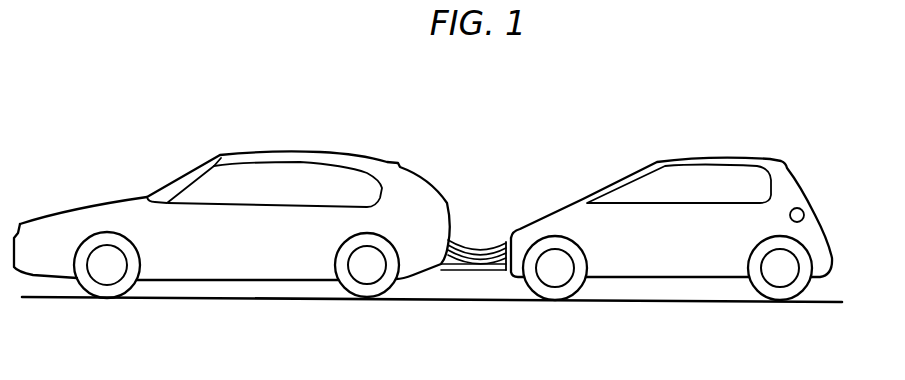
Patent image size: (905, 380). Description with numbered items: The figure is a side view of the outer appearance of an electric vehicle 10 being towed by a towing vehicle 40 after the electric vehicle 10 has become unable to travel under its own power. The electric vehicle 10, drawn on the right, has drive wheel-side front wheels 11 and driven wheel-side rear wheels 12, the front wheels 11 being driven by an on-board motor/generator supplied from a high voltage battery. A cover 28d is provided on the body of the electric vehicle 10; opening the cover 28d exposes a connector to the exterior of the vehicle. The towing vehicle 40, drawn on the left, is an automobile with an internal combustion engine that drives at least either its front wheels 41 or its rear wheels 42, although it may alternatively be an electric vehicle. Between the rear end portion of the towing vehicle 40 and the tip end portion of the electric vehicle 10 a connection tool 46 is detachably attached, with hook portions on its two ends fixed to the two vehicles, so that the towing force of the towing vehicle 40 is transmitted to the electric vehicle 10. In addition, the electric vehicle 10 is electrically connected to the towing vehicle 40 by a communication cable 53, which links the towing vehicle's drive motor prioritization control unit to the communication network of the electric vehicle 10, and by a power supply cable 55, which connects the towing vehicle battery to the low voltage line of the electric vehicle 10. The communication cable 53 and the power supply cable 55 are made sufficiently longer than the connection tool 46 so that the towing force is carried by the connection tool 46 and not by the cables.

The electric vehicle 10 is at (703, 272).
The front wheels 11 is at (556, 270).
The rear wheels 12 is at (781, 270).
The cover 28d is at (804, 211).
The towing vehicle 40 is at (377, 173).
The front wheels 41 is at (109, 273).
The rear wheels 42 is at (368, 275).
The connection tool 46 is at (460, 271).
The communication cable 53 is at (503, 263).
The power supply cable 55 is at (474, 246).